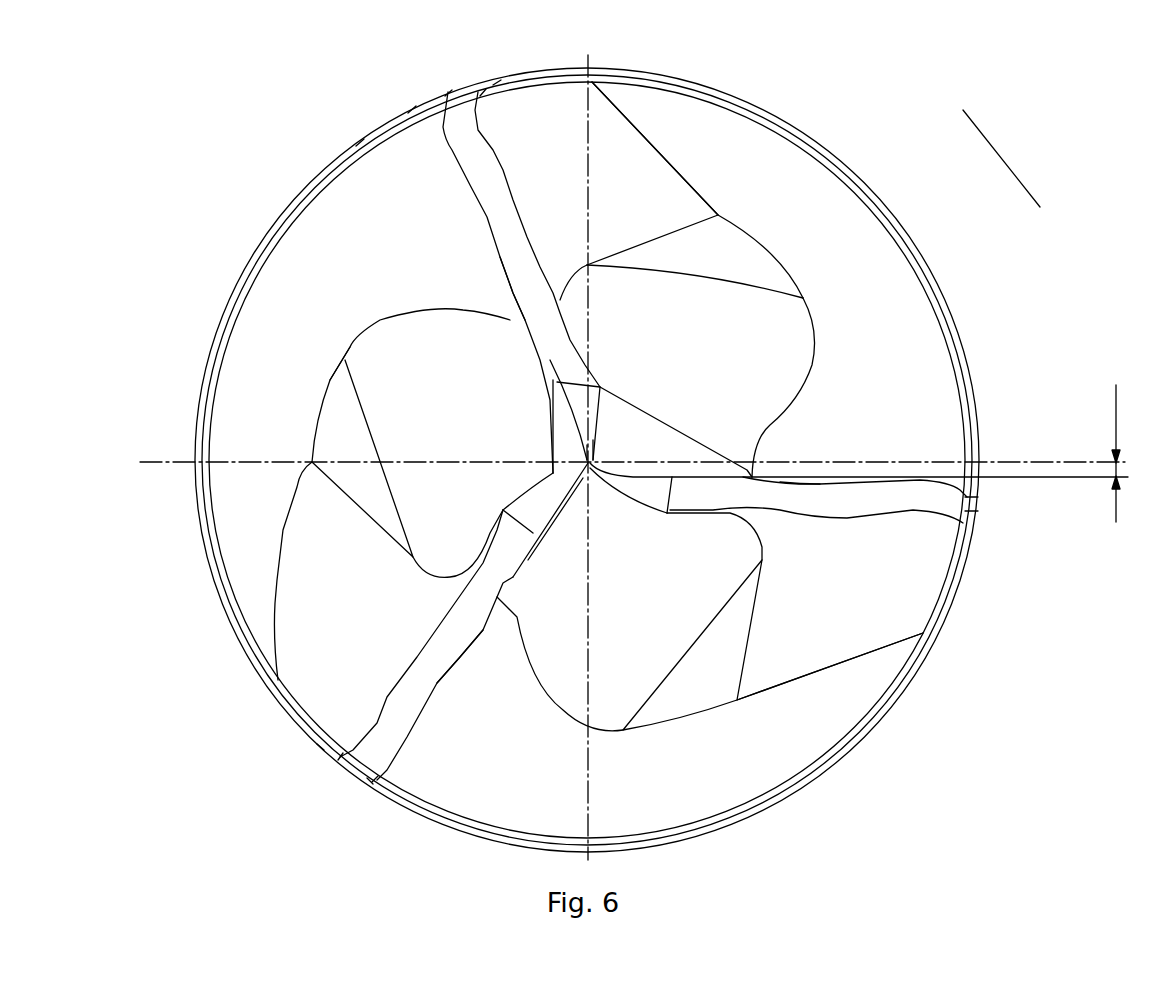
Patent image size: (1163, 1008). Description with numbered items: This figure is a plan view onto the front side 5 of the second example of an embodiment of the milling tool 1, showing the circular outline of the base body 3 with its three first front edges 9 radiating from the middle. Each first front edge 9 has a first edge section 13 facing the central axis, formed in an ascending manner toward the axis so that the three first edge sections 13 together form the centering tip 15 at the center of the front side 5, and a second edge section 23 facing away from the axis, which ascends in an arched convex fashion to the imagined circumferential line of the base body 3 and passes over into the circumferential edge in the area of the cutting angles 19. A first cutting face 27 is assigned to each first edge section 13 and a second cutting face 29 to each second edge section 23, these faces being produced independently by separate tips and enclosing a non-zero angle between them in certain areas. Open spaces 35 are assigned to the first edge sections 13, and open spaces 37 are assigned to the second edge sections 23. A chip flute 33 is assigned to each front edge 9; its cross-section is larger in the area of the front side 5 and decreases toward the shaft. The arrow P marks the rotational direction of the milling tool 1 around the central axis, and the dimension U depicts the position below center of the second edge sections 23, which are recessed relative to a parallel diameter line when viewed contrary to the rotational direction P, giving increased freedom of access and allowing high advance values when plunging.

The milling tool 1 is at (902, 86).
The base body 3 is at (247, 266).
The front side 5 is at (698, 353).
The first front edges 9 is at (399, 224).
The first edge section 13 is at (637, 470).
The centering tip 15 is at (598, 452).
The cutting angles 19 is at (497, 83).
The second edge section 23 is at (505, 293).
The first cutting face 27 is at (567, 445).
The second cutting face 29 is at (488, 353).
The chip flute 33 is at (253, 375).
The open spaces 35 is at (600, 380).
The open spaces 37 is at (473, 194).
The rotational direction P is at (961, 108).
The position below center U is at (1107, 452).